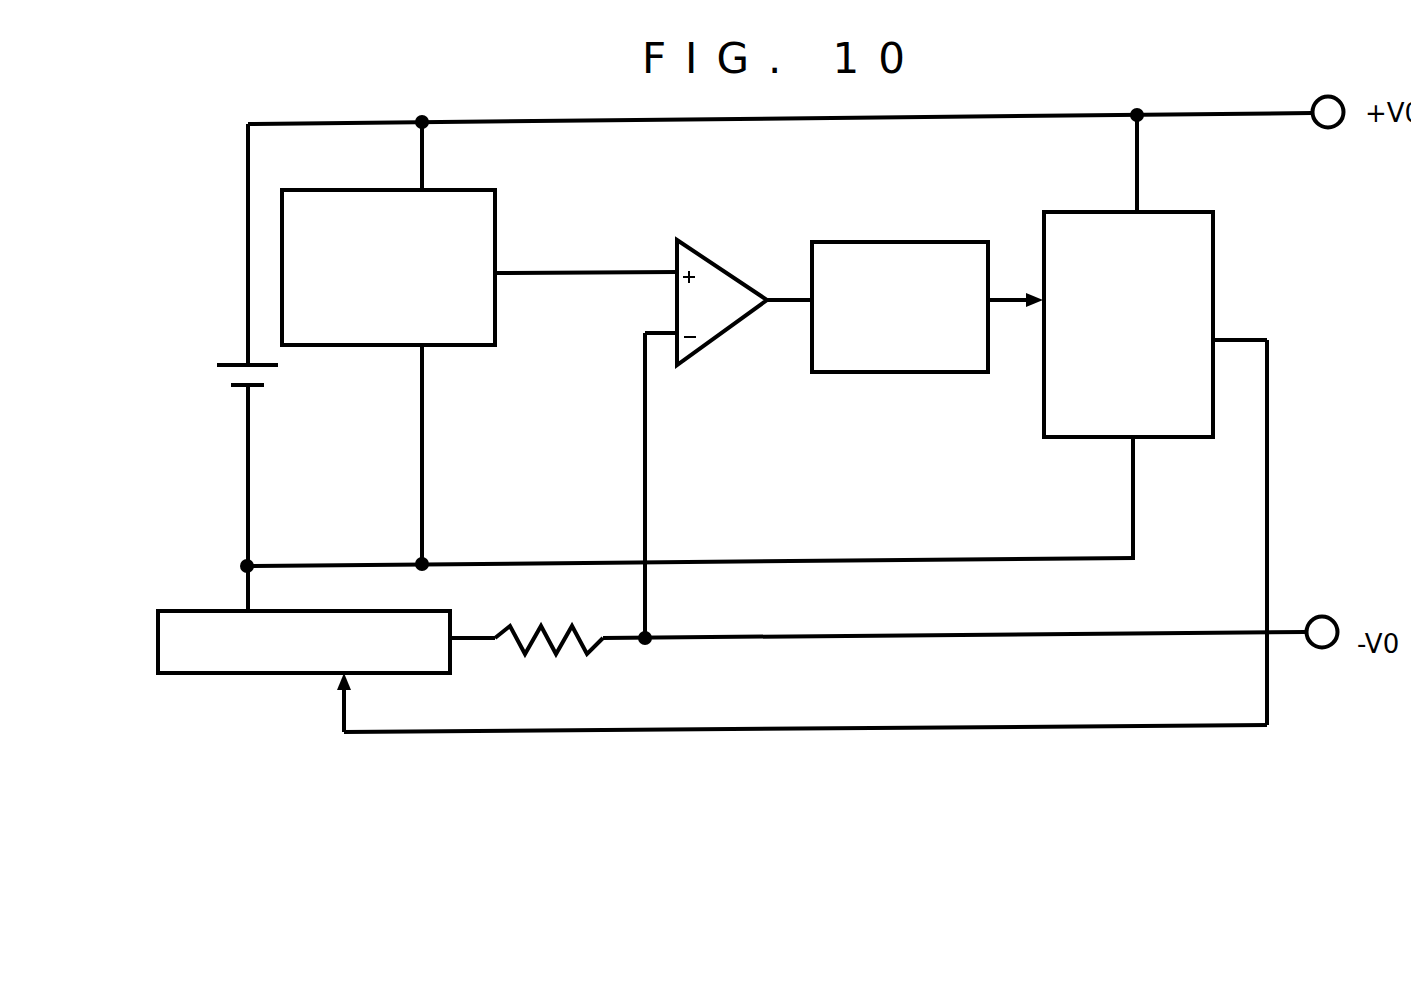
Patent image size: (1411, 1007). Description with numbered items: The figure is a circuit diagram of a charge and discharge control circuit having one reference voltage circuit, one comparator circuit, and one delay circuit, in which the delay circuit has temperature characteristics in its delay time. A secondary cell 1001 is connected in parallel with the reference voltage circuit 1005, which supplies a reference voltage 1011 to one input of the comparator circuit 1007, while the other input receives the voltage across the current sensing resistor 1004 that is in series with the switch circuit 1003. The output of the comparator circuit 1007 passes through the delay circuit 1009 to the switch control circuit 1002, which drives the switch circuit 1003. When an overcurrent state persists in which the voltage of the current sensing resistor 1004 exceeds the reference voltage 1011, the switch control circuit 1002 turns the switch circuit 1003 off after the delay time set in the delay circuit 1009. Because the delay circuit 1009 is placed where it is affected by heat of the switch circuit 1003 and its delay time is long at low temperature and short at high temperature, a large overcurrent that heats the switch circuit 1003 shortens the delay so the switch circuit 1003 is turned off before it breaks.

The secondary cell 1001 is at (296, 381).
The switch control circuit 1002 is at (1215, 325).
The switch circuit 1003 is at (264, 675).
The current sensing resistor 1004 is at (555, 670).
The reference voltage circuit 1005 is at (497, 225).
The comparator circuit 1007 is at (723, 267).
The delay circuit 1009 is at (872, 240).
The reference voltage 1011 is at (655, 267).